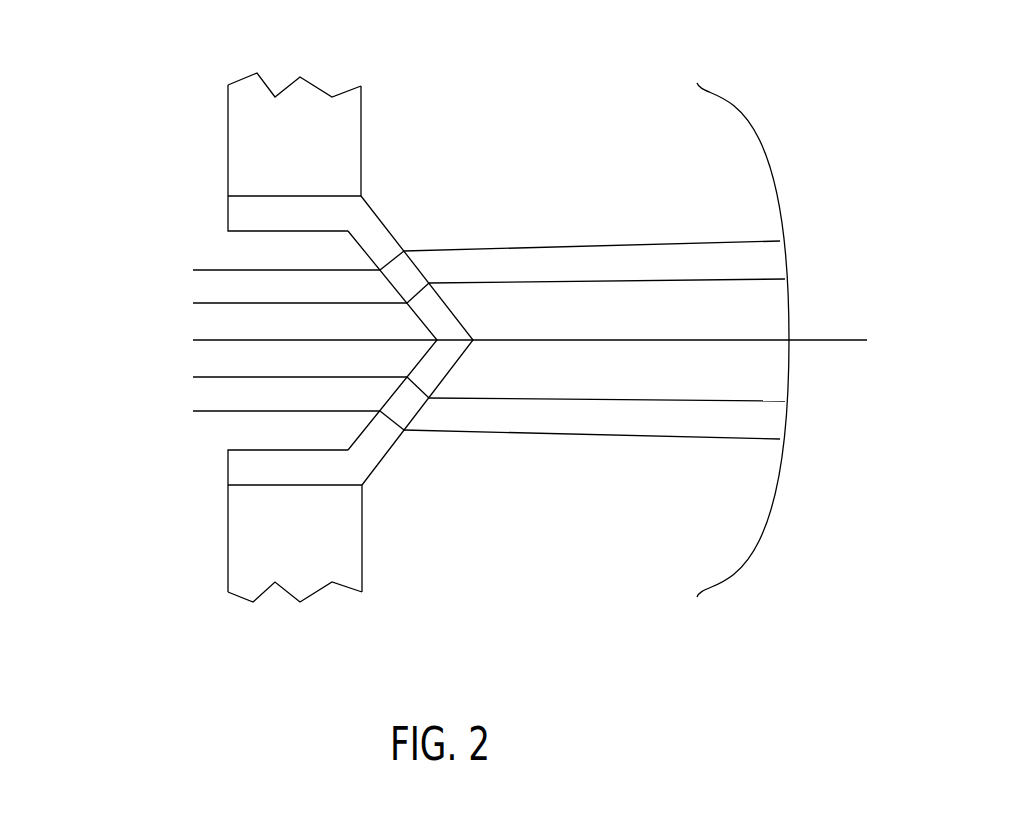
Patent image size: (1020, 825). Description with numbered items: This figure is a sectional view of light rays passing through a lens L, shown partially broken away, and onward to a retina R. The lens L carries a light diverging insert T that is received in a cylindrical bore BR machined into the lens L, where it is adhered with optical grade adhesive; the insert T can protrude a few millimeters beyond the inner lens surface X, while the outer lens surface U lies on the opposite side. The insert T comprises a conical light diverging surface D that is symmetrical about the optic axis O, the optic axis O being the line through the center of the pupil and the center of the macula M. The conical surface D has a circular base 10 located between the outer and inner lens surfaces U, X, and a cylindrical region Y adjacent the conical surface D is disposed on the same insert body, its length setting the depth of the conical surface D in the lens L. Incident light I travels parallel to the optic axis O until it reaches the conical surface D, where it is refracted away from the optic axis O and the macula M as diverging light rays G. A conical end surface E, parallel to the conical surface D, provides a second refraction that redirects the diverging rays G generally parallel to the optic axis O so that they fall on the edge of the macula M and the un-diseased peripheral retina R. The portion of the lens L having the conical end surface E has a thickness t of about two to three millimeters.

The circular base 10 is at (339, 374).
The lens L is at (285, 110).
The inner lens surface X is at (362, 128).
The outer lens surface U is at (227, 140).
The cylindrical bore BR is at (267, 196).
The cylindrical region Y is at (247, 208).
The light diverging insert T is at (222, 453).
The light diverging surface D is at (388, 282).
The conical end surface E is at (428, 276).
The incident light I is at (203, 303).
The optic axis O is at (740, 341).
The diverging light rays G is at (466, 399).
The retina R is at (757, 139).
The macula M is at (792, 339).
The thickness t is at (368, 448).